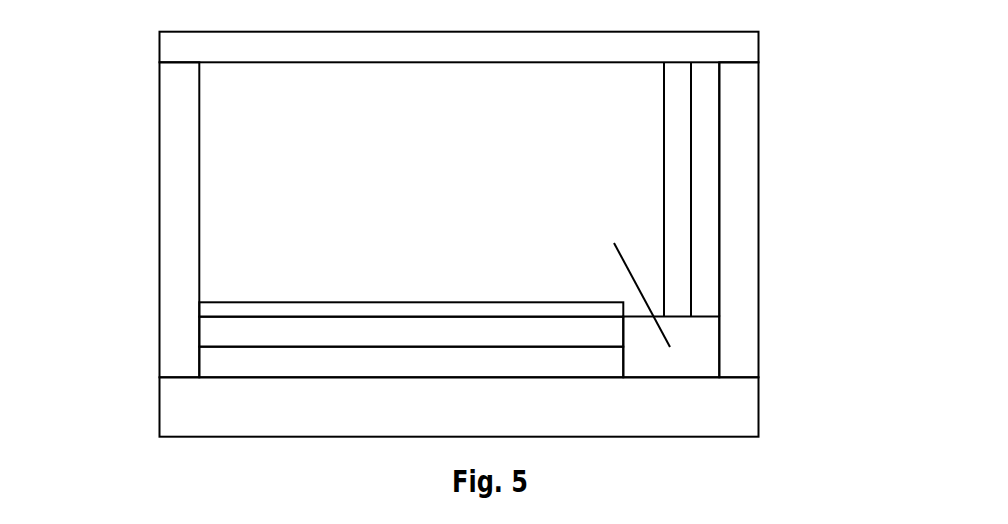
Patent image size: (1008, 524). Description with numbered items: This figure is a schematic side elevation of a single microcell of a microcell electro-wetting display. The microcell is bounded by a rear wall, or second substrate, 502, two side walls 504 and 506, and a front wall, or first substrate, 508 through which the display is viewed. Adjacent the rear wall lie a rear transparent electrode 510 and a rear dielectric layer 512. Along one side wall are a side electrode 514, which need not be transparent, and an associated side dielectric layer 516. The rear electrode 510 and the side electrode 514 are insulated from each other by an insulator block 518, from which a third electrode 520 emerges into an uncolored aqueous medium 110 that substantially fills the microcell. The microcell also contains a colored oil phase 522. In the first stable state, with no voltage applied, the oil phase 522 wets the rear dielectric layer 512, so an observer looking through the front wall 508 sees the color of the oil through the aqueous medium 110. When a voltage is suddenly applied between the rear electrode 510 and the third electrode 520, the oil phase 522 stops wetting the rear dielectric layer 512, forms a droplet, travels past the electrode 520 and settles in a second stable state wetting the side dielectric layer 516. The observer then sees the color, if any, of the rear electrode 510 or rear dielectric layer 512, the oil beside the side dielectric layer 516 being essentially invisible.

The uncolored aqueous medium 110 is at (486, 194).
The rear wall (second substrate) 502 is at (713, 406).
The side wall 504 is at (743, 361).
The side wall 506 is at (180, 217).
The front wall (first substrate) 508 is at (728, 47).
The rear transparent electrode 510 is at (240, 361).
The rear dielectric layer 512 is at (235, 332).
The side (second) electrode 514 is at (705, 242).
The side dielectric layer 516 is at (677, 190).
The insulator block 518 is at (707, 346).
The third electrode 520 is at (623, 263).
The colored oil phase 522 is at (295, 308).